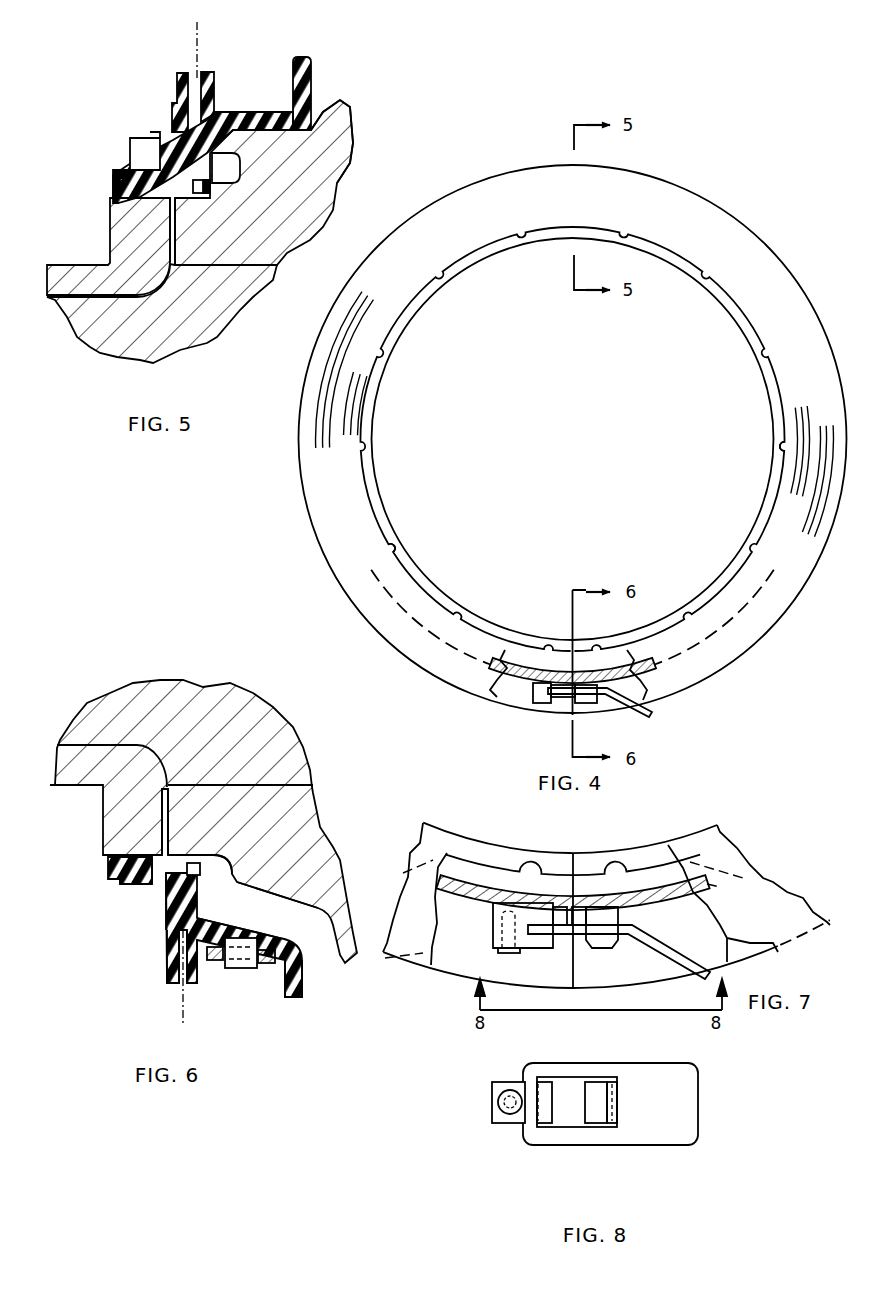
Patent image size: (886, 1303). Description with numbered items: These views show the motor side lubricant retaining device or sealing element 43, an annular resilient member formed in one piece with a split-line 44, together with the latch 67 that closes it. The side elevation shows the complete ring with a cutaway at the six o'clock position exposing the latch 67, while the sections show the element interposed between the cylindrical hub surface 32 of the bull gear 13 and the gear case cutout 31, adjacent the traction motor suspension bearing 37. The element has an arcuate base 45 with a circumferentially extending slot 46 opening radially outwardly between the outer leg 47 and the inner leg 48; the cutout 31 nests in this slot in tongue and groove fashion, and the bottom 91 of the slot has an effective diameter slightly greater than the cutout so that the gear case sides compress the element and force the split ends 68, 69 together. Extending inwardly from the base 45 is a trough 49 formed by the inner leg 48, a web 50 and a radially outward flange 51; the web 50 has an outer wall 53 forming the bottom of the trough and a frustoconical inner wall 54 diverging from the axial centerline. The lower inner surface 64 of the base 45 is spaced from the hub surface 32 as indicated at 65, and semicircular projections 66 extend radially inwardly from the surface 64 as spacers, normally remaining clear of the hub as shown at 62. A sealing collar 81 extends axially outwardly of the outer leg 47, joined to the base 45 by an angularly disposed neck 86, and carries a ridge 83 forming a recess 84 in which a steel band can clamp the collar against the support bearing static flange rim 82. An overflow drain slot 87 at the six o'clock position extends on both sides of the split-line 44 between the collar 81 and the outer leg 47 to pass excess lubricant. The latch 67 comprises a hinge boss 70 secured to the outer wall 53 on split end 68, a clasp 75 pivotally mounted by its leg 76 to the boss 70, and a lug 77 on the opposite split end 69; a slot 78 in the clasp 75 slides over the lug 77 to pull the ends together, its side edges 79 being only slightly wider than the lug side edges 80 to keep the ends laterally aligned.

In FIG. 5, the bull gear 13 is at (346, 118).
In FIG. 5, the gear case cutout 31 is at (172, 105).
In FIG. 5, the hub surface 32 is at (222, 168).
In FIG. 6, the hub surface 32 is at (210, 847).
In FIG. 5, the traction motor suspension bearing 37 is at (82, 283).
In FIG. 5, the motor side sealing element 43 is at (320, 60).
In FIG. 6, the motor side sealing element 43 is at (308, 983).
In FIG. 4, the motor side sealing element 43 is at (757, 226).
In FIG. 4, the split-line 44 is at (578, 660).
In FIG. 7, the split-line 44 is at (578, 870).
In FIG. 5, the base 45 is at (150, 148).
In FIG. 6, the base 45 is at (205, 877).
In FIG. 5, the slot 46 is at (192, 72).
In FIG. 6, the slot 46 is at (190, 990).
In FIG. 5, the outer leg 47 is at (178, 88).
In FIG. 6, the outer leg 47 is at (170, 957).
In FIG. 5, the inner leg 48 is at (214, 95).
In FIG. 6, the inner leg 48 is at (200, 977).
In FIG. 5, the trough 49 is at (253, 92).
In FIG. 6, the trough 49 is at (278, 955).
In FIG. 5, the web 50 is at (226, 168).
In FIG. 5, the flange 51 is at (314, 80).
In FIG. 6, the flange 51 is at (296, 960).
In FIG. 5, the outer wall 53 is at (275, 113).
In FIG. 5, the inner wall 54 is at (228, 138).
In FIG. 6, the inner wall 54 is at (277, 897).
In FIG. 5, the spacing from hub surface 62 is at (214, 199).
In FIG. 4, the spacing from hub surface 62 is at (776, 442).
In FIG. 6, the lower inner circumferential surface 64 is at (166, 910).
In FIG. 5, the spacing 65 is at (183, 200).
In FIG. 6, the spacing 65 is at (180, 850).
In FIG. 6, the projections 66 is at (220, 857).
In FIG. 4, the projections 66 is at (390, 545).
In FIG. 4, the latch 67 is at (632, 688).
In FIG. 7, the latch 67 is at (621, 912).
In FIG. 8, the latch 67 is at (593, 1098).
In FIG. 7, the split end 68 is at (553, 975).
In FIG. 7, the split end 69 is at (640, 972).
In FIG. 7, the hinge boss 70 is at (493, 918).
In FIG. 8, the hinge boss 70 is at (494, 1113).
In FIG. 7, the clasp 75 is at (672, 946).
In FIG. 8, the clasp 75 is at (640, 1112).
In FIG. 8, the leg 76 is at (533, 1136).
In FIG. 7, the lug 77 is at (620, 915).
In FIG. 8, the lug 77 is at (594, 1100).
In FIG. 8, the slot 78 is at (625, 1090).
In FIG. 8, the slot side edges 79 is at (566, 1077).
In FIG. 8, the side edges 80 is at (598, 1082).
In FIG. 5, the sealing collar 81 is at (110, 178).
In FIG. 5, the support bearing static flange rim 82 is at (121, 192).
In FIG. 6, the support bearing static flange rim 82 is at (123, 847).
In FIG. 5, the ridge 83 is at (116, 166).
In FIG. 6, the ridge 83 is at (108, 870).
In FIG. 6, the recess 84 is at (125, 887).
In FIG. 5, the neck 86 is at (157, 135).
In FIG. 6, the overflow drain slot 87 is at (153, 900).
In FIG. 6, the slot bottom 91 is at (213, 917).